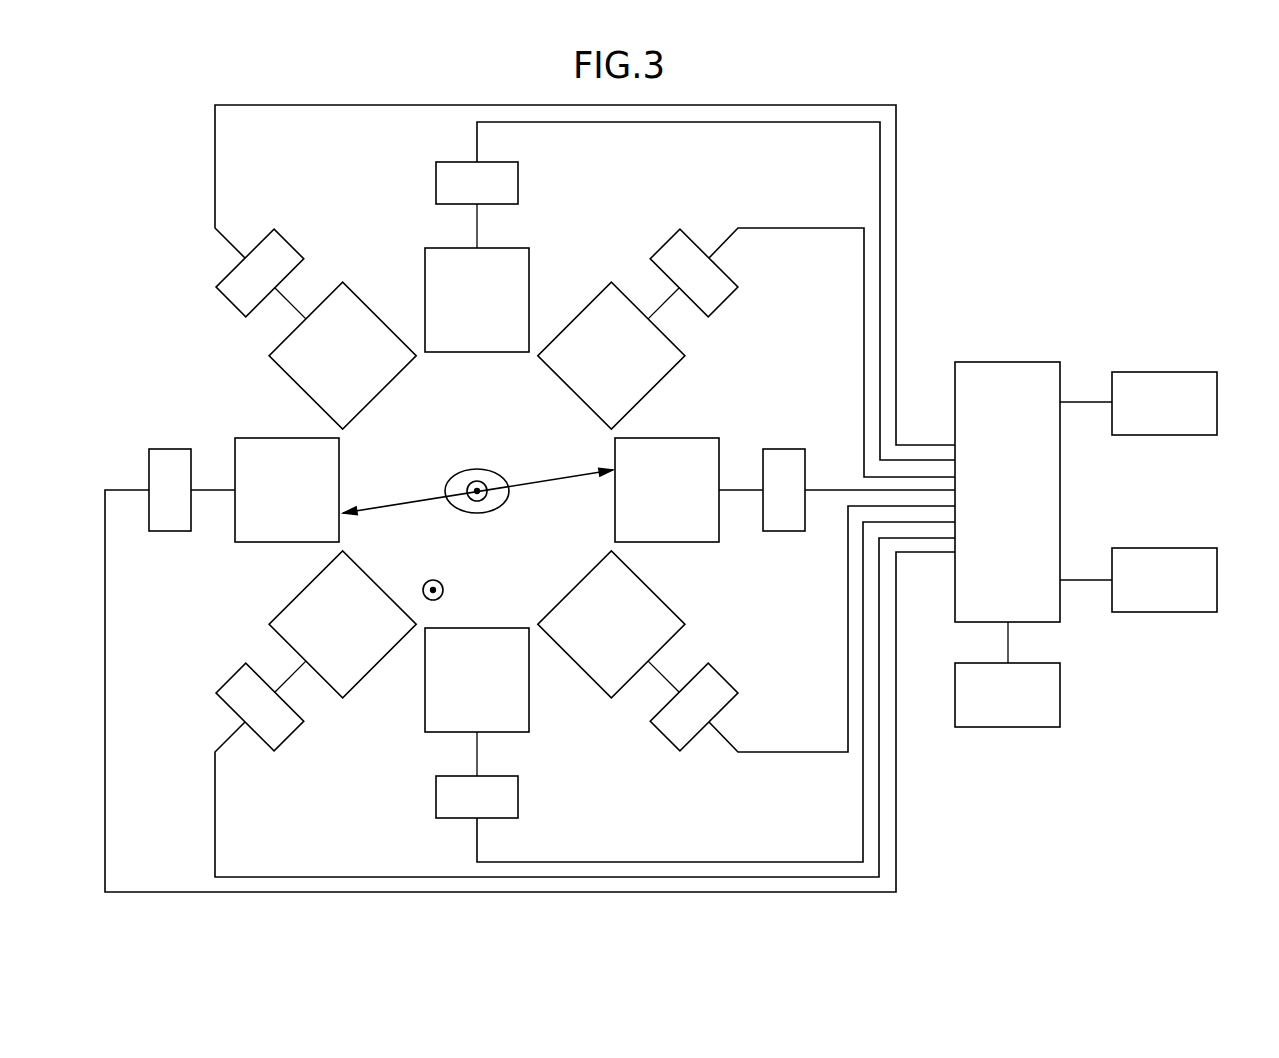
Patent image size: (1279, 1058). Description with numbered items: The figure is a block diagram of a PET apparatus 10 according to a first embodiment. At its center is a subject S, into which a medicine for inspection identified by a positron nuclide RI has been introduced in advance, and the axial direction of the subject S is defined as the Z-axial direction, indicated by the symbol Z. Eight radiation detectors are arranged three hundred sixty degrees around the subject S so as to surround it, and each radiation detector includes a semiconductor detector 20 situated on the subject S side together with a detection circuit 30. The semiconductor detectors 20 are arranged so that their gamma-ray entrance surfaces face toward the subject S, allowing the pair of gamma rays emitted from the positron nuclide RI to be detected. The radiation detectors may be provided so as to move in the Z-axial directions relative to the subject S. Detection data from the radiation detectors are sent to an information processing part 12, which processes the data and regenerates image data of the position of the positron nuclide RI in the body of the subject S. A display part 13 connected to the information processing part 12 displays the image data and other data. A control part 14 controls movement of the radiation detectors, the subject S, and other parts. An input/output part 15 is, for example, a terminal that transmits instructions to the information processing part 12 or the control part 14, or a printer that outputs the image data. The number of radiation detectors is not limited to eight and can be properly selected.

The PET apparatus 10 is at (161, 91).
The semiconductor detector 20 is at (530, 258).
The detection circuit 30 is at (520, 183).
The information processing part 12 is at (1012, 362).
The display part 13 is at (1170, 372).
The control part 14 is at (1060, 690).
The input/output part 15 is at (1170, 548).
The subject S is at (495, 470).
The positron nuclide RI is at (487, 498).
The Z-axial direction Z is at (441, 598).